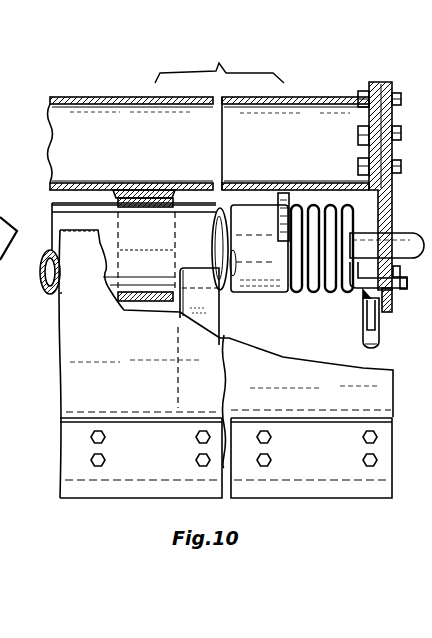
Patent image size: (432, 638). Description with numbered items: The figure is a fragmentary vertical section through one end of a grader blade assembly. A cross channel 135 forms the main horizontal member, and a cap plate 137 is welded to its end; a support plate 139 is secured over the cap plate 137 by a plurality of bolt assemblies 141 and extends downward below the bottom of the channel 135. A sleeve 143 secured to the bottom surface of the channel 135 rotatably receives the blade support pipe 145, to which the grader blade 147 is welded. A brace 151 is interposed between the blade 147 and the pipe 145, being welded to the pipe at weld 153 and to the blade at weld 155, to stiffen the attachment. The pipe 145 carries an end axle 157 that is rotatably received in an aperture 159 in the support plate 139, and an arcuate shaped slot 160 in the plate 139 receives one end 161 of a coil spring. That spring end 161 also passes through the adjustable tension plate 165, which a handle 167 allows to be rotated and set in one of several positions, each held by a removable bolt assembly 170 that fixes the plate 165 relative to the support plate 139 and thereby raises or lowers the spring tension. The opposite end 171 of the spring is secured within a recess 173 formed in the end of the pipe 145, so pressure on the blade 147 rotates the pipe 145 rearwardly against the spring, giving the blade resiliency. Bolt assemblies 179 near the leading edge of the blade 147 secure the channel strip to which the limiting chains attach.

The cross channel 135 is at (70, 97).
The cap plate 137 is at (374, 82).
The support plate 139 is at (397, 127).
The bolt assembly 141 is at (397, 93).
The sleeve 143 is at (181, 197).
The blade support pipe 145 is at (62, 205).
The grader blade 147 is at (127, 350).
The brace 151 is at (216, 318).
The weld 153 is at (193, 268).
The weld 155 is at (200, 408).
The end axle 157 is at (413, 233).
The aperture 159 is at (388, 262).
The arcuate shaped slot 160 is at (392, 319).
The spring end 161 is at (397, 297).
The adjustable tension plate 165 is at (363, 303).
The handle 167 is at (363, 347).
The removable bolt assembly 170 is at (400, 271).
The opposite spring end 171 is at (283, 193).
The recess 173 is at (277, 219).
The bolt assembly 179 is at (363, 457).